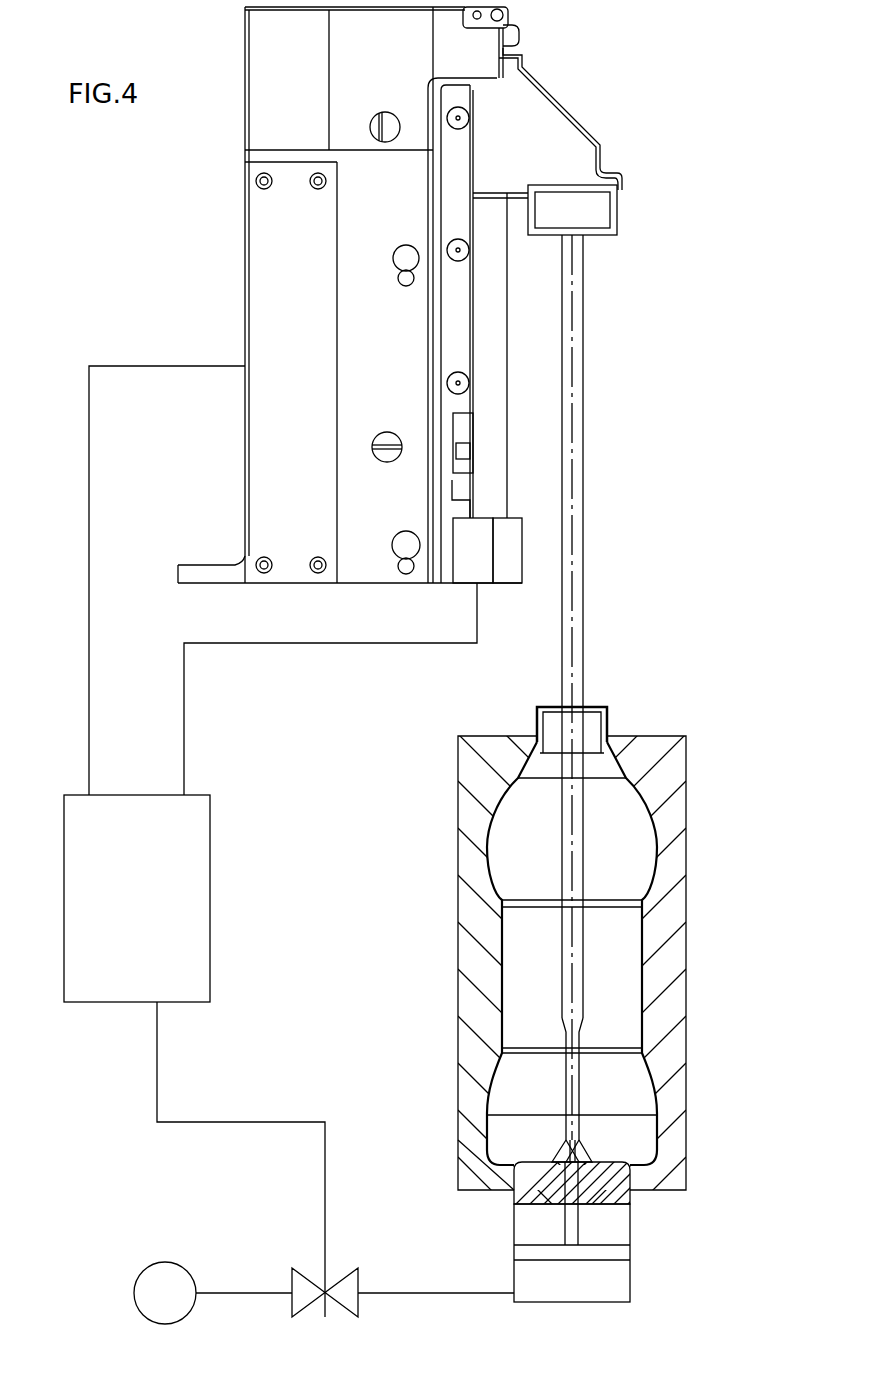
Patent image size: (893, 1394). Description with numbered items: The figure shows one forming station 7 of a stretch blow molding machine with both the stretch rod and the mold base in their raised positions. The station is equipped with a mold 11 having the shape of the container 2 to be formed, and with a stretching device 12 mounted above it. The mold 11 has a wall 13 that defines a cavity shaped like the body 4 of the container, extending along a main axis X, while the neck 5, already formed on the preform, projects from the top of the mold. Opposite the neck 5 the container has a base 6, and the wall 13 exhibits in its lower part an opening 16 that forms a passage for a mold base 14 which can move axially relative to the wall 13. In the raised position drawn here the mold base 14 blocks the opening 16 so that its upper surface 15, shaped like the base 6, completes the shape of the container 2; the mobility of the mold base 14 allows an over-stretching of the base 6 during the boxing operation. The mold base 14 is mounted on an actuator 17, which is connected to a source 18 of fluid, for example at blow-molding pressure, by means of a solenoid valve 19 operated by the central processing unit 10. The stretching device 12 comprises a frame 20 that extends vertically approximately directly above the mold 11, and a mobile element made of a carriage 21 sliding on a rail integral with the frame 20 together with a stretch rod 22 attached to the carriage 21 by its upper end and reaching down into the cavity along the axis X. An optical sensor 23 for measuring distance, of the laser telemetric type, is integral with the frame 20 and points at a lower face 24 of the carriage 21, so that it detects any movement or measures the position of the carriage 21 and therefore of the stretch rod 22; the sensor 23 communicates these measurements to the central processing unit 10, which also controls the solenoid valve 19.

The forming station 7 is at (652, 102).
The carriage 21 is at (538, 120).
The lower face 24 is at (506, 212).
The stretching device 12 is at (655, 236).
The stretch rod 22 is at (573, 437).
The optical sensor 23 is at (503, 545).
The frame 20 is at (368, 560).
The neck 5 is at (535, 722).
The mold 11 is at (689, 778).
The container 2 is at (485, 822).
The body 4 is at (641, 950).
The wall 13 is at (672, 921).
The main axis X is at (577, 978).
The base 6 is at (533, 1162).
The opening 16 is at (512, 1181).
The upper surface 15 is at (560, 1150).
The mold base 14 is at (612, 1185).
The actuator 17 is at (632, 1257).
The source of fluid 18 is at (183, 1259).
The solenoid valve 19 is at (363, 1275).
The central processing unit 10 is at (211, 874).